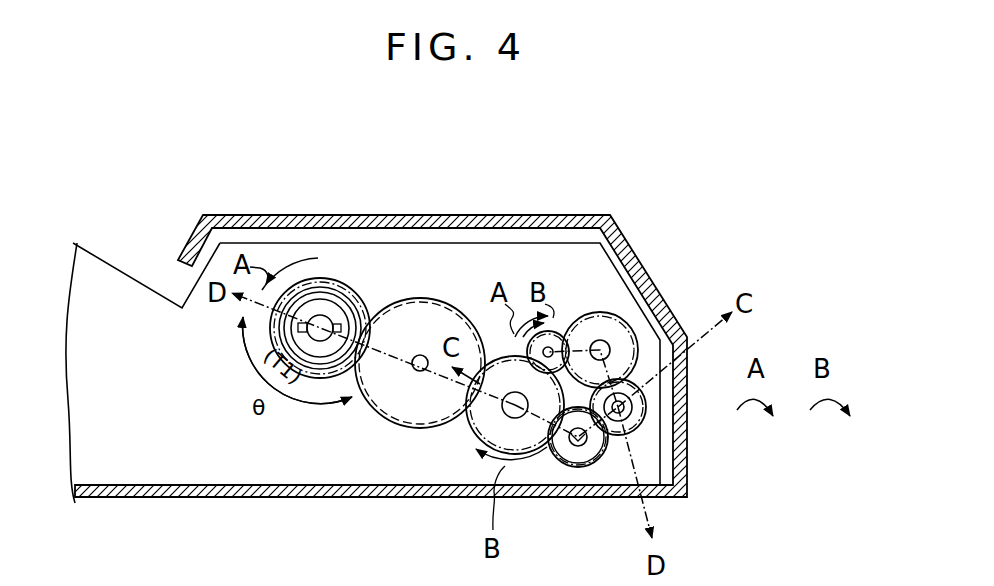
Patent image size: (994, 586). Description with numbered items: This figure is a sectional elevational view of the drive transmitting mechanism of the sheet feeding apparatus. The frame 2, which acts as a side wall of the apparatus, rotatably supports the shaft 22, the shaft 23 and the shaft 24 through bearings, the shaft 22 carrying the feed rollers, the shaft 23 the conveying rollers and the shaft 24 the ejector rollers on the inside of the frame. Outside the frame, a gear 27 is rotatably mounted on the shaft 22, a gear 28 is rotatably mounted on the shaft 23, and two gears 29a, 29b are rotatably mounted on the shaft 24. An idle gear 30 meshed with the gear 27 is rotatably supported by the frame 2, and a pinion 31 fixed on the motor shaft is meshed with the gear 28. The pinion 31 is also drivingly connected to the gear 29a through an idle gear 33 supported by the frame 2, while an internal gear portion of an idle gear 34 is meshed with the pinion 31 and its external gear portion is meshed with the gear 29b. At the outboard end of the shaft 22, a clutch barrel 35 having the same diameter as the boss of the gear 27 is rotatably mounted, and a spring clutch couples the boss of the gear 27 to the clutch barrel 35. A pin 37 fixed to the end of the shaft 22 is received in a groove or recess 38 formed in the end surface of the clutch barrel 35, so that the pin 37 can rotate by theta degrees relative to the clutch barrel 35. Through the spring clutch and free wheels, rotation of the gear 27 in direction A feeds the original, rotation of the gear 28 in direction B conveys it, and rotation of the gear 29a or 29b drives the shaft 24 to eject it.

The frame 2 is at (170, 455).
The shaft 22 is at (352, 292).
The shaft 23 is at (477, 435).
The shaft 24 is at (645, 428).
The gear 27 is at (333, 292).
The gear 28 is at (532, 433).
The gear 29a is at (640, 411).
The gear 29b is at (624, 404).
The idle gear 30 is at (408, 405).
The pinion 31 is at (551, 349).
The idle gear 33 is at (613, 330).
The idle gear 34 is at (583, 453).
The clutch barrel 35 is at (300, 305).
The pin 37 is at (370, 300).
The groove or recess 38 is at (323, 348).